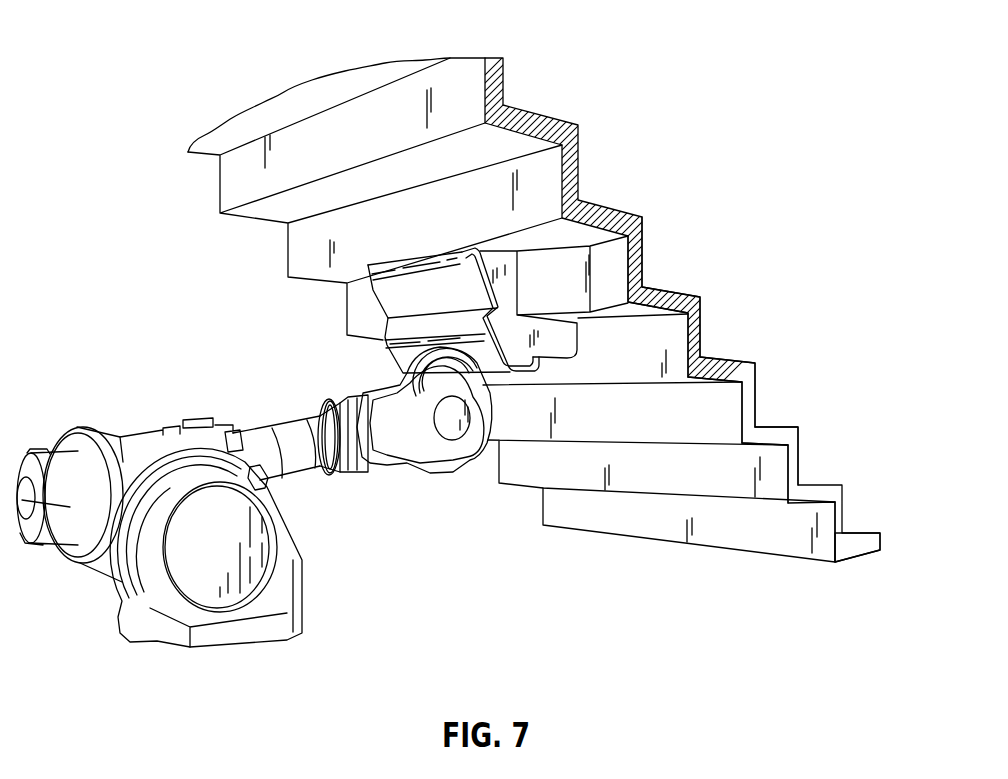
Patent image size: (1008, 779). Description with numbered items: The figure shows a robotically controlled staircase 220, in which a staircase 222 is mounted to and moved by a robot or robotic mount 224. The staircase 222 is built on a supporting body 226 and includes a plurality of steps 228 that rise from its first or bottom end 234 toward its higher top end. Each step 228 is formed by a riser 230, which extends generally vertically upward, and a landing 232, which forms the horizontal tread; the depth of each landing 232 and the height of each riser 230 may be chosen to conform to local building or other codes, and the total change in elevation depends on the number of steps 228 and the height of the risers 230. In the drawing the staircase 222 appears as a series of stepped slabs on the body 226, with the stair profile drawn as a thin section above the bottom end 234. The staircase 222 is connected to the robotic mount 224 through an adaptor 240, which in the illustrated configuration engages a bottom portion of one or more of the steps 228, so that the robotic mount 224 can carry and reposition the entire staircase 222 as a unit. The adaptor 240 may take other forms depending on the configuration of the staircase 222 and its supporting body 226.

The robotically controlled staircase 220 is at (254, 490).
The staircase 222 is at (636, 146).
The robotic mount 224 is at (165, 386).
The supporting body 226 is at (668, 545).
The steps 228 is at (708, 326).
The riser 230 is at (756, 397).
The landing 232 is at (738, 360).
The bottom end 234 is at (882, 532).
The adaptor 240 is at (383, 300).